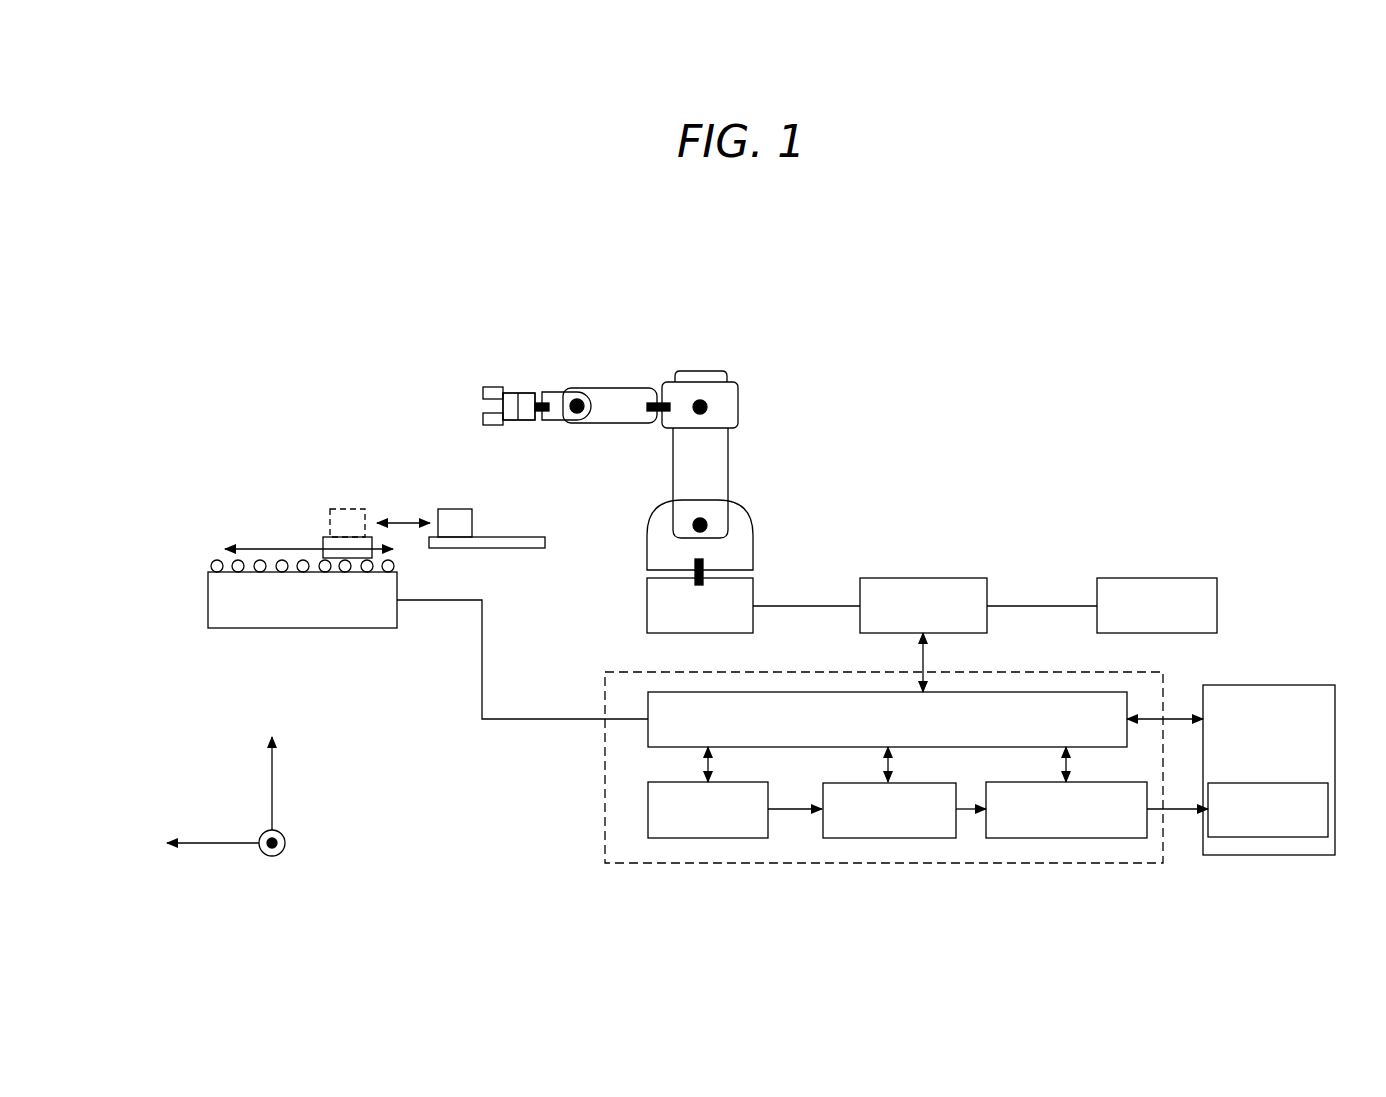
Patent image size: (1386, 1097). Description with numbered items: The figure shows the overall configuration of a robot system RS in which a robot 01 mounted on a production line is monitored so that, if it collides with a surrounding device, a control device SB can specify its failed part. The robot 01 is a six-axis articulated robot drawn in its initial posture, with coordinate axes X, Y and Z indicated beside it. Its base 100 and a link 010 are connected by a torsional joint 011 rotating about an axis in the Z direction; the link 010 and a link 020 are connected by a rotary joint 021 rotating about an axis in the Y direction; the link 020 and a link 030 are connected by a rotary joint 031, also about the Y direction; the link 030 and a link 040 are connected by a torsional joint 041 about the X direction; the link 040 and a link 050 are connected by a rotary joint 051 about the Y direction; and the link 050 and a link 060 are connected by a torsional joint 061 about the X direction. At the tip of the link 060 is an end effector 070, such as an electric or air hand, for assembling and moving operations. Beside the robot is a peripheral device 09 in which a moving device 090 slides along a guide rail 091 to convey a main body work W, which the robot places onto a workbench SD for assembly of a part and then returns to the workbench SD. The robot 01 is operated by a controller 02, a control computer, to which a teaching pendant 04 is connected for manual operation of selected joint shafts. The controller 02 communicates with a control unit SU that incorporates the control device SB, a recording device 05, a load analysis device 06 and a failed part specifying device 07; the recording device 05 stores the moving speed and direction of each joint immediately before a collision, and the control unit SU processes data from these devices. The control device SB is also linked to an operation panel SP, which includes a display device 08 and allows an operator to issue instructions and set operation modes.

The robot 01 is at (702, 306).
The controller 02 is at (930, 578).
The teaching pendant 04 is at (1157, 578).
The recording device 05 is at (700, 838).
The load analysis device 06 is at (888, 838).
The failed part specifying device 07 is at (1065, 838).
The display device 08 is at (1265, 837).
The peripheral device 09 is at (332, 630).
The link 010 is at (647, 545).
The torsional joint 011 is at (703, 562).
The link 020 is at (670, 488).
The rotary joint 021 is at (706, 522).
The link 030 is at (740, 408).
The rotary joint 031 is at (703, 413).
The link 040 is at (637, 388).
The torsional joint 041 is at (650, 414).
The link 050 is at (558, 392).
The rotary joint 051 is at (579, 414).
The link 060 is at (528, 392).
The torsional joint 061 is at (543, 414).
The end effector 070 is at (512, 392).
The moving device 090 is at (347, 542).
The guide rail 091 is at (260, 561).
The base 100 is at (647, 598).
The robot system RS is at (848, 270).
The main body work W is at (333, 508).
The workbench SD is at (478, 548).
The control unit SU is at (1053, 672).
The control device SB is at (997, 692).
The operation panel SP is at (1270, 685).
The X axis X is at (203, 844).
The Y axis Y is at (282, 843).
The Z axis Z is at (272, 770).